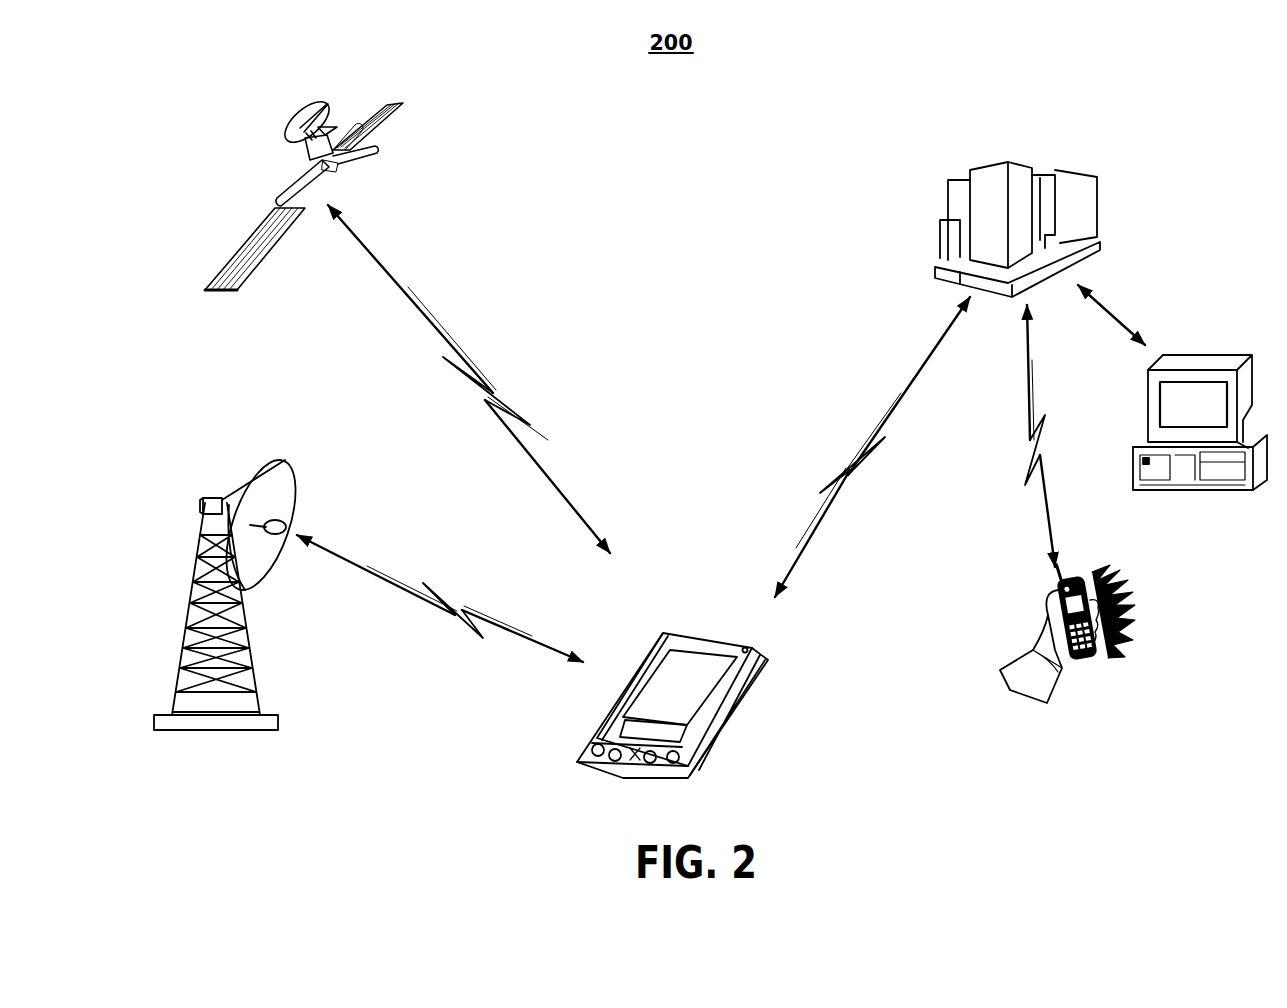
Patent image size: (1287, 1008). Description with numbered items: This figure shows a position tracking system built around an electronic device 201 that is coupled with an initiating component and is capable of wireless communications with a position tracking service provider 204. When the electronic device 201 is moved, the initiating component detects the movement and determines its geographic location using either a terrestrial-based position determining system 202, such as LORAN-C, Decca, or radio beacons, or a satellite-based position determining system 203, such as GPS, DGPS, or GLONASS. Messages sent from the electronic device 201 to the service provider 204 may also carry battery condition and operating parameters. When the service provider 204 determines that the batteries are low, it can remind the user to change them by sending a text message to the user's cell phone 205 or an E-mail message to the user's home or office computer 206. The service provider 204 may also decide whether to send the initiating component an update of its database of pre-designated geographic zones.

The electronic device 201 is at (697, 628).
The terrestrial-based position determining system 202 is at (233, 473).
The satellite-based position determining system 203 is at (287, 112).
The position tracking service provider 204 is at (937, 180).
The cell phone 205 is at (1090, 673).
The computer 206 is at (1203, 345).